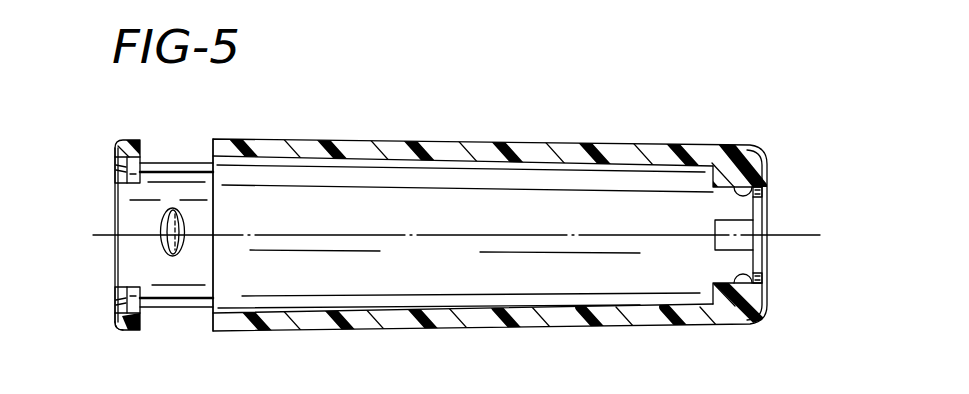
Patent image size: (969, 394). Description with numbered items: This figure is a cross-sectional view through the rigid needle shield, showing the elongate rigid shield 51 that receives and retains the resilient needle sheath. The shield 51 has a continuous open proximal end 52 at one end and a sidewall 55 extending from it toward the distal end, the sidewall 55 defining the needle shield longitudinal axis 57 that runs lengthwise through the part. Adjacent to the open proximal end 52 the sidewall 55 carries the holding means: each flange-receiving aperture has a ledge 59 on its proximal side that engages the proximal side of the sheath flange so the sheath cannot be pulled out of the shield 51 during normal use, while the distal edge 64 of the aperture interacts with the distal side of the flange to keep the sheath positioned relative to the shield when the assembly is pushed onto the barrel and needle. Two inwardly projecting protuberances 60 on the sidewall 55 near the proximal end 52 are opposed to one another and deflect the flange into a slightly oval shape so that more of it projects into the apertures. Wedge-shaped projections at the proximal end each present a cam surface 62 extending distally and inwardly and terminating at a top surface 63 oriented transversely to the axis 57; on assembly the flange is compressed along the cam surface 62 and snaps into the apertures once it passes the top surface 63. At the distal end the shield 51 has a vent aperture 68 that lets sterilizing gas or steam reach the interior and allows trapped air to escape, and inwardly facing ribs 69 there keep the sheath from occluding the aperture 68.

The rigid shield 51 is at (617, 134).
The continuous open proximal end 52 is at (116, 316).
The sidewall 55 is at (490, 139).
The needle shield longitudinal axis 57 is at (100, 237).
The ledge 59 is at (141, 322).
The inwardly projecting protuberances 60 is at (166, 228).
The cam surface 62 is at (115, 162).
The top surface 63 is at (143, 157).
The distal edge 64 is at (210, 152).
The aperture 68 is at (764, 246).
The inwardly facing ribs 69 is at (742, 218).